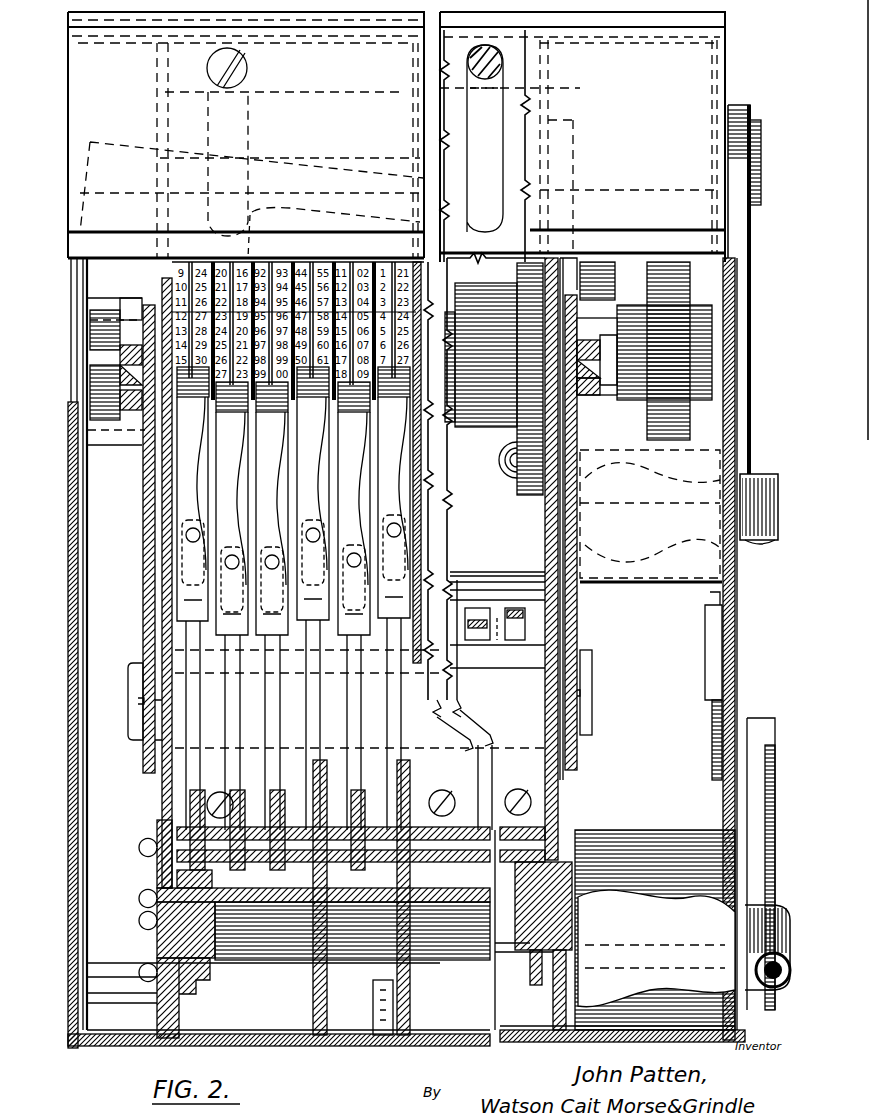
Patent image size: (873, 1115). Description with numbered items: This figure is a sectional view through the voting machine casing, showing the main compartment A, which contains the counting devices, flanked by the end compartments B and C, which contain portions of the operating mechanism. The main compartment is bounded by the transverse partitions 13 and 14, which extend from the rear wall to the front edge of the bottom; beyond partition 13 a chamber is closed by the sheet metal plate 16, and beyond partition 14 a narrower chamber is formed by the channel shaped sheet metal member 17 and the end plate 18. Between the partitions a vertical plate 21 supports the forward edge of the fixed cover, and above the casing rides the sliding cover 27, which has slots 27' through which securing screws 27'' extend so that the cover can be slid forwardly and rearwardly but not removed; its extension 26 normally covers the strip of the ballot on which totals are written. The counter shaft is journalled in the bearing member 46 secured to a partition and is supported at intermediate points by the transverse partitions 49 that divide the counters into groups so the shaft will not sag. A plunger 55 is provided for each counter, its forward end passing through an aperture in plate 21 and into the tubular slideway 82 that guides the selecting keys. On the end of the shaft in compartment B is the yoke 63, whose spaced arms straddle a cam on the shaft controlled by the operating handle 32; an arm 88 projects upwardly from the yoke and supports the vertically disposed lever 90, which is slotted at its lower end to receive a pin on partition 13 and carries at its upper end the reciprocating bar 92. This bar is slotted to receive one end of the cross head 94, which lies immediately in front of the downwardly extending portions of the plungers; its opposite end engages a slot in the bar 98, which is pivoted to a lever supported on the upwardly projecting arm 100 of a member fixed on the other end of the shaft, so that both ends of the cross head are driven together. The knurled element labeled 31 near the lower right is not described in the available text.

The extension 26 is at (95, 248).
The securing screws 27'' is at (404, 66).
The slots 27' is at (324, 174).
The sliding cover 27 is at (539, 138).
The operating handle 32 is at (750, 308).
The sheet metal plate 16 is at (737, 651).
The end plate 18 is at (70, 708).
The channel shaped sheet metal member 17 is at (80, 976).
The upwardly projecting arm 100 is at (86, 374).
The bar 98 is at (143, 556).
The transverse partition 14 is at (165, 644).
The plunger 55 is at (195, 495).
The transverse partitions 49 is at (428, 465).
The bearing member 46 is at (478, 429).
The reciprocating bar 92 is at (558, 606).
The transverse partition 13 is at (560, 630).
The cross head 94 is at (592, 664).
The yoke 63 is at (660, 275).
The arm 88 is at (682, 403).
The lever 90 is at (597, 340).
The vertical plate 21 is at (455, 810).
The tubular slideway 82 is at (503, 810).
The knob 31 is at (762, 886).
The main compartment A is at (481, 697).
The end compartment B is at (631, 707).
The end compartment C is at (121, 795).